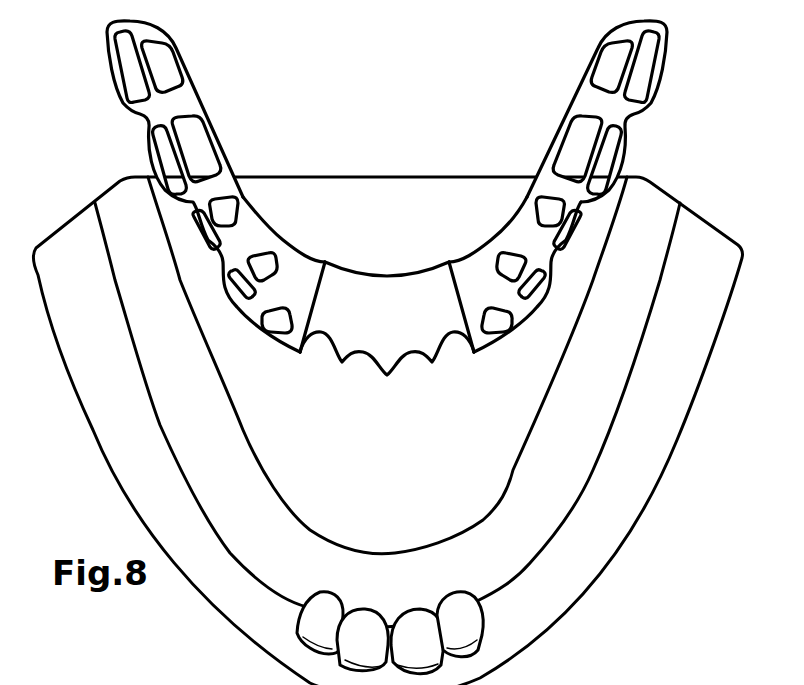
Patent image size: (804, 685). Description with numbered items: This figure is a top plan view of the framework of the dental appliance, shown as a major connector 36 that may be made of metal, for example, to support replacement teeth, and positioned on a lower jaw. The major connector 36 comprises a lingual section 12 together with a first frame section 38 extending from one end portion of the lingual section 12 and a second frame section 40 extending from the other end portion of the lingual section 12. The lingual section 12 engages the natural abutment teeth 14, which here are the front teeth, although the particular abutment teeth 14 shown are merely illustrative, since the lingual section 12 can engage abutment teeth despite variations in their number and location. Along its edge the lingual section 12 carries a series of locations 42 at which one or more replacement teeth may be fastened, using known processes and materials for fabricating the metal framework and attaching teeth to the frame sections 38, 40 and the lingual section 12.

The lingual section 12 is at (395, 302).
The natural abutment tooth 14 is at (362, 633).
The major connector 36 is at (598, 107).
The first frame section 38 is at (532, 242).
The second frame section 40 is at (248, 234).
The locations 42 is at (302, 355).